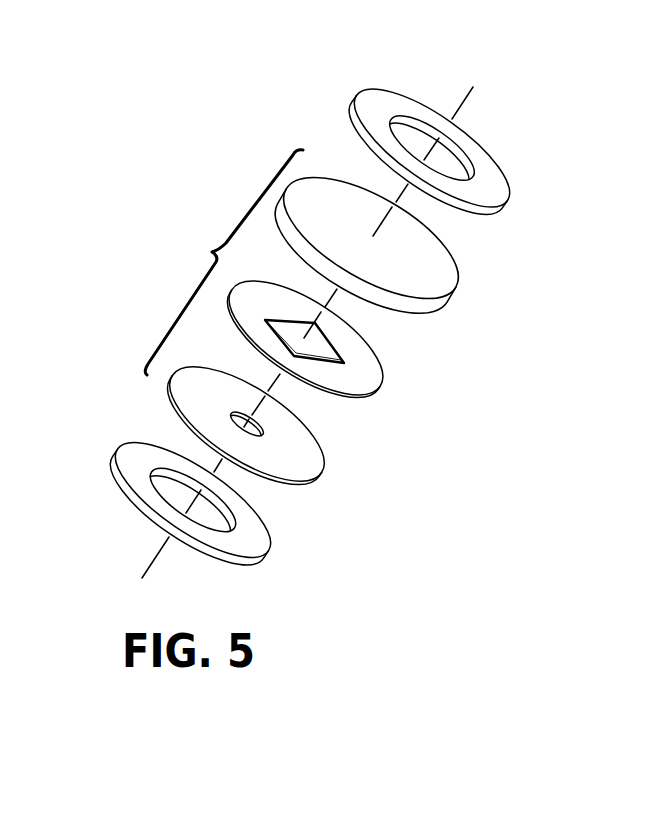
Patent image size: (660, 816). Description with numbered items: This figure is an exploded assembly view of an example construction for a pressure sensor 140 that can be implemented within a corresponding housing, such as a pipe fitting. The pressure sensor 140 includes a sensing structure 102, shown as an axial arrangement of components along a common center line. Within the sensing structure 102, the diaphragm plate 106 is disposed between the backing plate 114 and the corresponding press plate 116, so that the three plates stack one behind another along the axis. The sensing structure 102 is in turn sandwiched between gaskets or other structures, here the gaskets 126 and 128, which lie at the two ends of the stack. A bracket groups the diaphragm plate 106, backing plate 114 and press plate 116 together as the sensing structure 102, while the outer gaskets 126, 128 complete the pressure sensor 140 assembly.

The pressure sensor 140 is at (194, 104).
The sensing structure 102 is at (212, 252).
The gasket 126 is at (267, 550).
The press plate 116 is at (317, 450).
The diaphragm plate 106 is at (377, 380).
The backing plate 114 is at (417, 310).
The gasket 128 is at (490, 208).